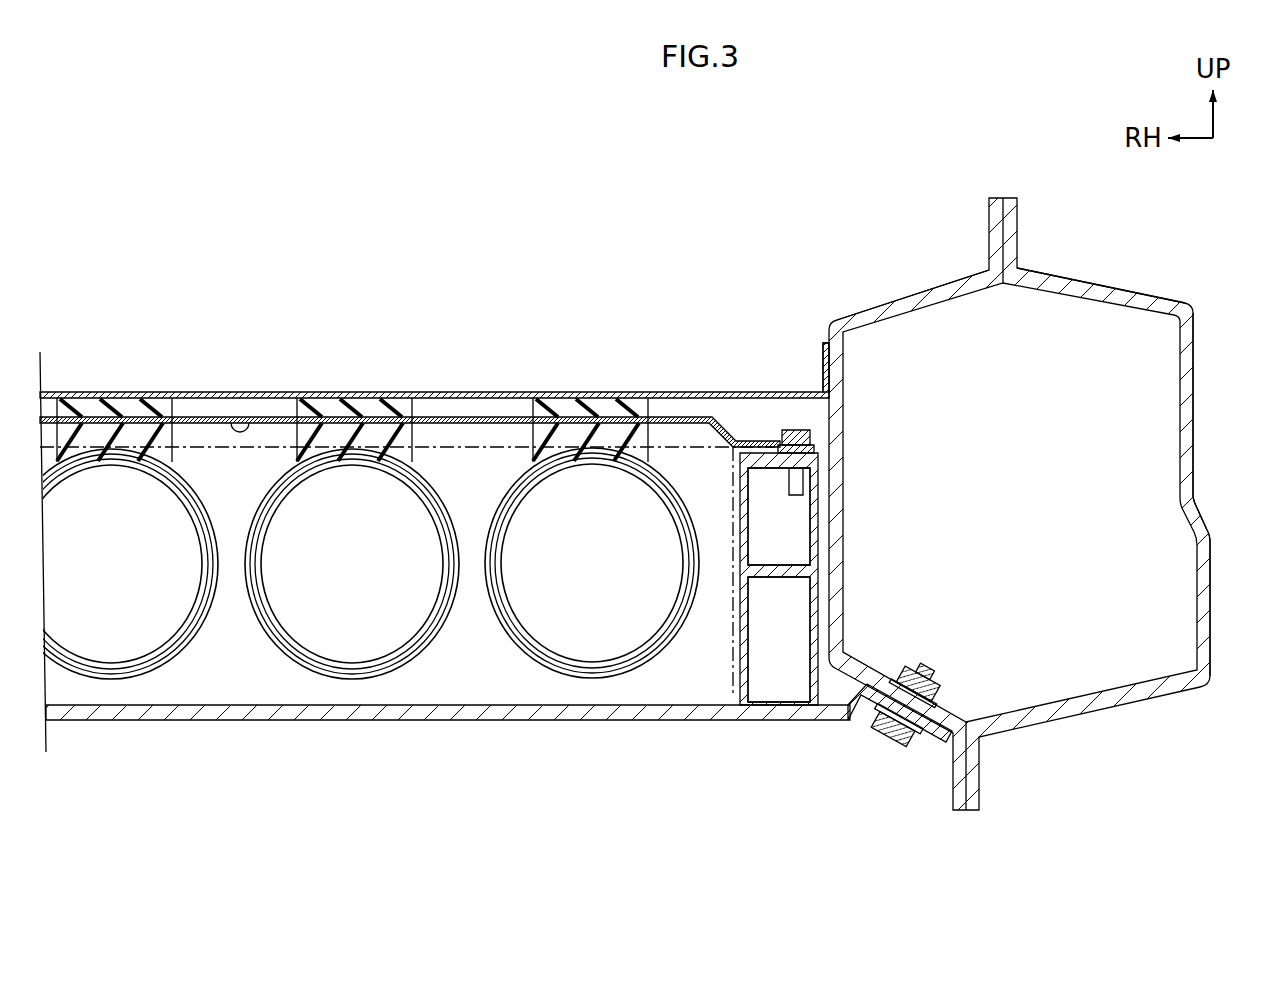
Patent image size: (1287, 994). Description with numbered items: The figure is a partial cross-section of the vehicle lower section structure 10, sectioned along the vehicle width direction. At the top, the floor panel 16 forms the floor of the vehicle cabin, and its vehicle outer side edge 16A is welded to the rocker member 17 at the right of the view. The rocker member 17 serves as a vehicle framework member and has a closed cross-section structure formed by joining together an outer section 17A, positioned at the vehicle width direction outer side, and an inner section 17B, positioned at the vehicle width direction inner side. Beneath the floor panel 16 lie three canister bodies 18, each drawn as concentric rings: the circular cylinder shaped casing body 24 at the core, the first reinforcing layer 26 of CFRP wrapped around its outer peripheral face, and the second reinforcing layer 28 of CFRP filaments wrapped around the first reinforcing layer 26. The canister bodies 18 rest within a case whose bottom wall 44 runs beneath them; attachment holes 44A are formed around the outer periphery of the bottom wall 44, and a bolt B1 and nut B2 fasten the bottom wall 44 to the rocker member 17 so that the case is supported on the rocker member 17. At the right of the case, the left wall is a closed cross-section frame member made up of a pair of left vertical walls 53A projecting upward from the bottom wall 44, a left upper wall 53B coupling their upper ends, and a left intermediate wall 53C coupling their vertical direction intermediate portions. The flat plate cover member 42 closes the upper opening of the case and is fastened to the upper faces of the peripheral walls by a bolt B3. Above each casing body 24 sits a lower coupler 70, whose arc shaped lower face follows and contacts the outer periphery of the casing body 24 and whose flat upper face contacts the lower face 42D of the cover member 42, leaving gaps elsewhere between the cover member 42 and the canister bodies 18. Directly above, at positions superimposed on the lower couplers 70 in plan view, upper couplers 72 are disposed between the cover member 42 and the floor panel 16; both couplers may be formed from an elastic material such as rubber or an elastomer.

The vehicle lower portion structure 10 is at (571, 212).
The floor panel 16 is at (156, 389).
The vehicle outer side edge 16A is at (823, 345).
The rocker member 17 is at (1203, 255).
The outer section 17A is at (1196, 373).
The inner section 17B is at (852, 318).
The canister body 18 is at (174, 670).
The casing body 24 is at (358, 676).
The first reinforcing layer 26 is at (350, 677).
The second reinforcing layer 28 is at (320, 673).
The cover member 42 is at (201, 413).
The lower face 42D is at (253, 437).
The bottom wall 44 is at (655, 722).
The attachment hole 44A is at (893, 746).
The left vertical wall 53A is at (810, 675).
The left upper wall 53B is at (775, 471).
The left intermediate wall 53C is at (778, 578).
The lower coupler 70 is at (56, 437).
The upper coupler 72 is at (56, 409).
The bolt B1 is at (898, 768).
The nut B2 is at (941, 657).
The bolt B3 is at (789, 431).